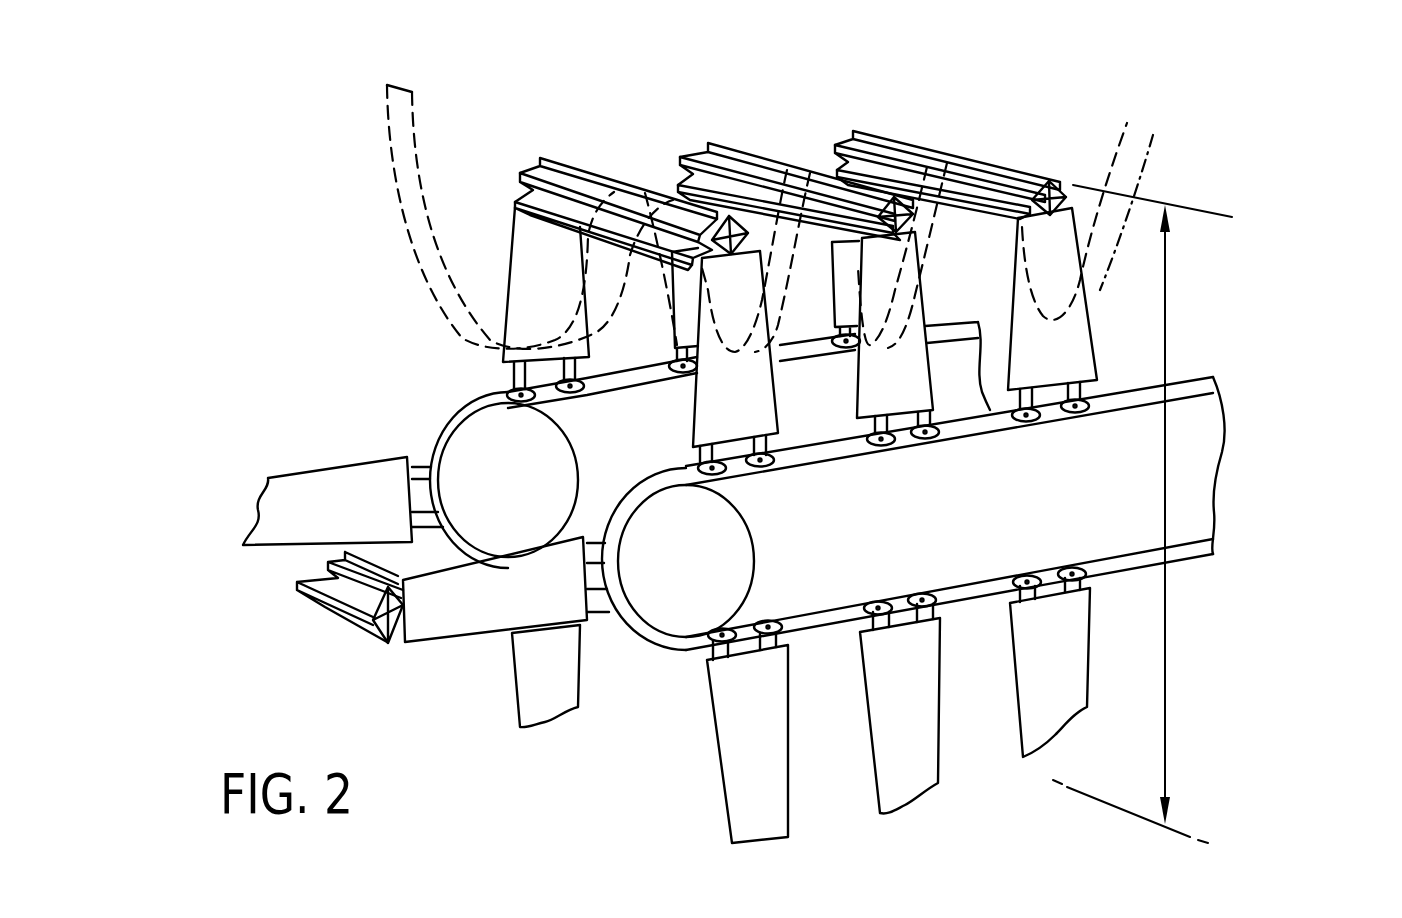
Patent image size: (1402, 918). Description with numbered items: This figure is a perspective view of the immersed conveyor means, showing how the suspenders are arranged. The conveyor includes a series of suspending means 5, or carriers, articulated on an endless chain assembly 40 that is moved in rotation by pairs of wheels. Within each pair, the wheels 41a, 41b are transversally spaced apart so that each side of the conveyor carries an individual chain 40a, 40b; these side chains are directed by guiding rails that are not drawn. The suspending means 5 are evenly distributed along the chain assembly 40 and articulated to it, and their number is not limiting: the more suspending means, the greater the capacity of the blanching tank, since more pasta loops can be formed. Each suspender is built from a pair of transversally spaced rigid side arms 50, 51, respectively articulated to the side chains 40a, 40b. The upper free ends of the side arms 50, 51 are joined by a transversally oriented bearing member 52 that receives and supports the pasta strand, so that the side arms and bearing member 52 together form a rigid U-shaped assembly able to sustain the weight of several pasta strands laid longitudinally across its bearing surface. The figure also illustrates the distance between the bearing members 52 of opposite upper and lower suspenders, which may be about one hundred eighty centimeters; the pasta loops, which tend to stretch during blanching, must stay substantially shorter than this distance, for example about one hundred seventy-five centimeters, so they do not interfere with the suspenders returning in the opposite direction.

The suspending means 5 is at (556, 132).
The endless chain assembly 40 is at (728, 558).
The individual chain 40a is at (1211, 381).
The individual chain 40b is at (952, 333).
The wheel 41a is at (663, 605).
The wheel 41b is at (477, 445).
The side arm 50 is at (537, 262).
The side arm 51 is at (718, 418).
The bearing member 52 is at (584, 168).